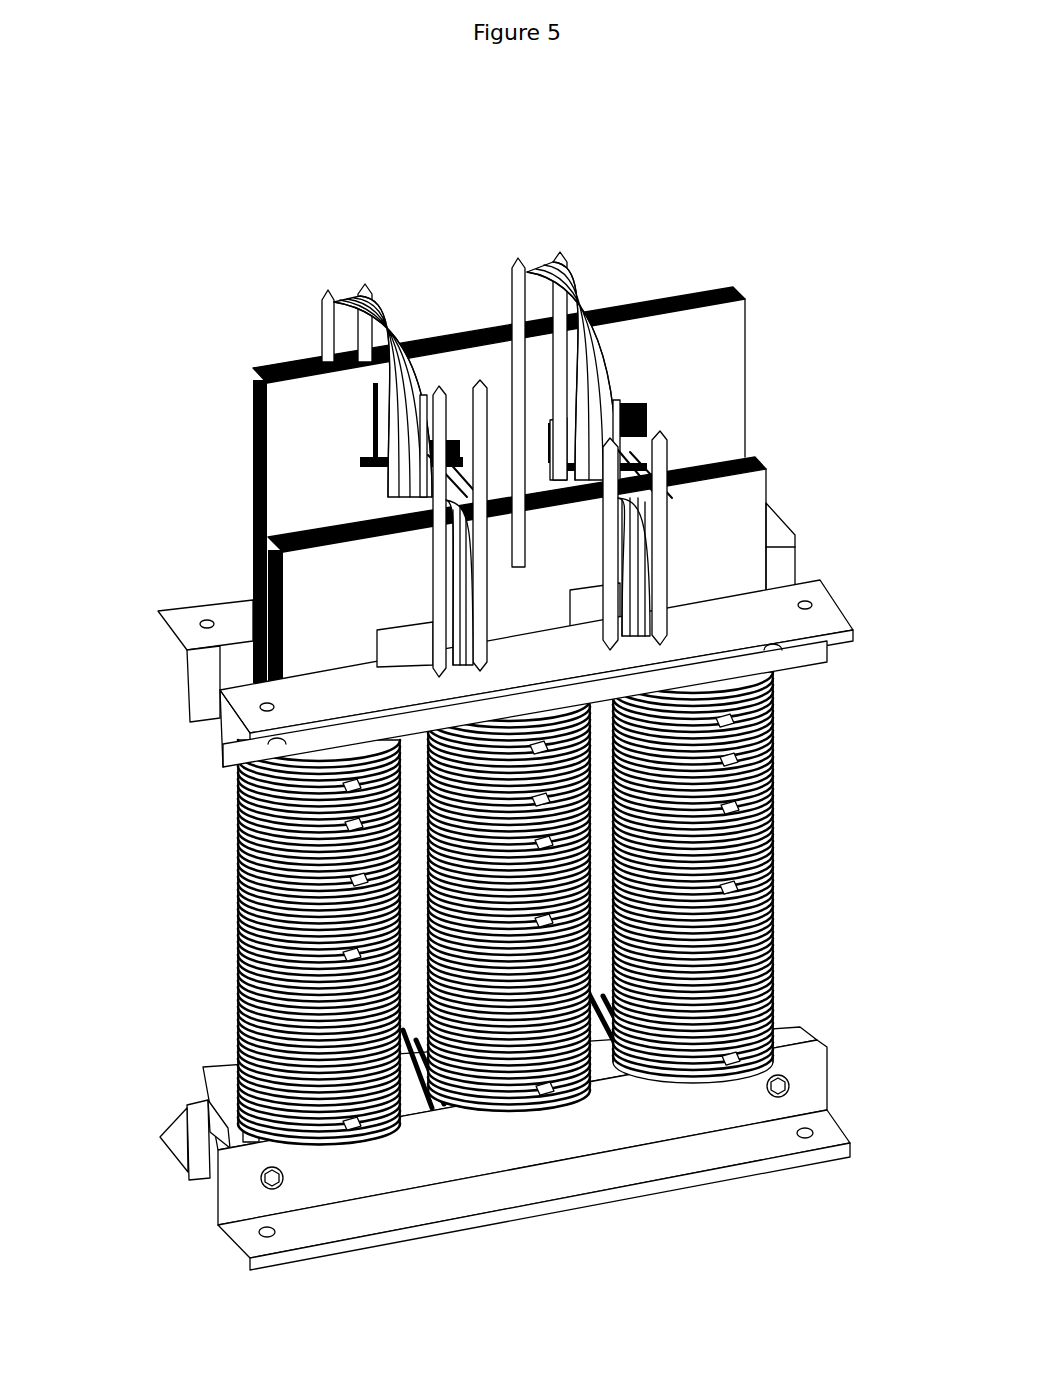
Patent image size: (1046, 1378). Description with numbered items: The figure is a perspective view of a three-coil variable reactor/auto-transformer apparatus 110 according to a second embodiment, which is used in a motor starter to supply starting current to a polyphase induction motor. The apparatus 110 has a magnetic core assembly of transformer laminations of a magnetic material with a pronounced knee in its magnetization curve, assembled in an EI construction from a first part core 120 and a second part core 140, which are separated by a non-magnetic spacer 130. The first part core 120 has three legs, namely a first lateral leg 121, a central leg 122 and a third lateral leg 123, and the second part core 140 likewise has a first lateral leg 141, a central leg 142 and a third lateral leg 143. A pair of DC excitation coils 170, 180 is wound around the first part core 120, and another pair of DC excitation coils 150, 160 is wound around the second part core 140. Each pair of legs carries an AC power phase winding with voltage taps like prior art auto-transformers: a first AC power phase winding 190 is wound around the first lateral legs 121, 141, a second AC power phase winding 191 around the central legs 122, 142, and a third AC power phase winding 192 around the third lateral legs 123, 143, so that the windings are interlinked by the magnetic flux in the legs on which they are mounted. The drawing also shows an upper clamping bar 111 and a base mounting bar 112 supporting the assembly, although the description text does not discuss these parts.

The variable reactor/auto-transformer apparatus 110 is at (176, 243).
The upper clamping bar 111 is at (317, 613).
The base mounting bar 112 is at (385, 1206).
The first part core 120 is at (758, 464).
The first lateral leg 121 is at (200, 623).
The central leg 122 is at (481, 426).
The third lateral leg 123 is at (720, 545).
The non-magnetic spacer 130 is at (770, 434).
The second part core 140 is at (720, 292).
The first lateral leg 141 is at (300, 453).
The central leg 142 is at (527, 463).
The third lateral leg 143 is at (697, 397).
The DC excitation coil 150 is at (341, 290).
The DC excitation coil 160 is at (566, 296).
The DC excitation coil 170 is at (300, 463).
The DC excitation coil 180 is at (798, 512).
The first AC power phase winding 190 is at (240, 924).
The second AC power phase winding 191 is at (543, 1032).
The third AC power phase winding 192 is at (790, 856).